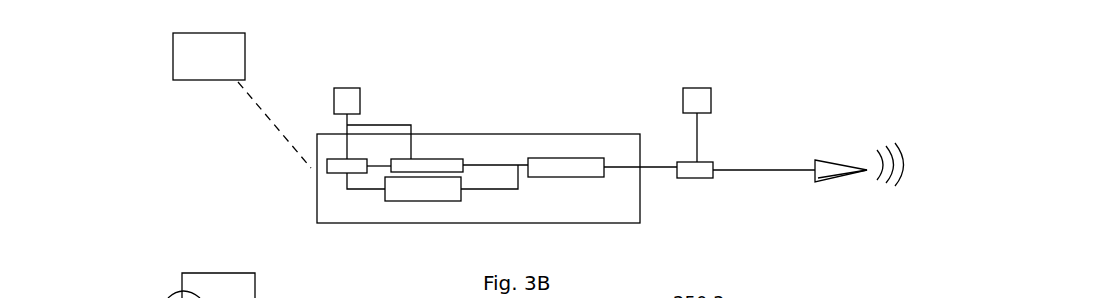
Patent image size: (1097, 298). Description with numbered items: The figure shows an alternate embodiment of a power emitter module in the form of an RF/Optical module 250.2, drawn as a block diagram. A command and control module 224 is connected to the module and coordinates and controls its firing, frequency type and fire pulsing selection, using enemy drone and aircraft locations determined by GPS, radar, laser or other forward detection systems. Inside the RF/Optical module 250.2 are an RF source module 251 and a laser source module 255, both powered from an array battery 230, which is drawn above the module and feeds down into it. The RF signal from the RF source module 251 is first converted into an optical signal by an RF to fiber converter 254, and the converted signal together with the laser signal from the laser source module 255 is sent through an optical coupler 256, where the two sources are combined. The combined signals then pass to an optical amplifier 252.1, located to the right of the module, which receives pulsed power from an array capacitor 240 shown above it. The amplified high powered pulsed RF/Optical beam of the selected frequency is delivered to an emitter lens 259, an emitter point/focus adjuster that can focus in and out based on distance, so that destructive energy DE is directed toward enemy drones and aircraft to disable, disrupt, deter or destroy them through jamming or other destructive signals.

The command and control module 224 is at (195, 51).
The array battery 230 is at (348, 97).
The array capacitor 240 is at (700, 98).
The RF/Optical module 250.2 is at (641, 84).
The RF source module 251 is at (337, 169).
The optical amplifier 252.1 is at (703, 163).
The RF to fiber converter 254 is at (437, 162).
The laser source module 255 is at (425, 194).
The optical coupler 256 is at (562, 170).
The emitter lens 259 is at (822, 180).
The destructive energy DE is at (890, 132).